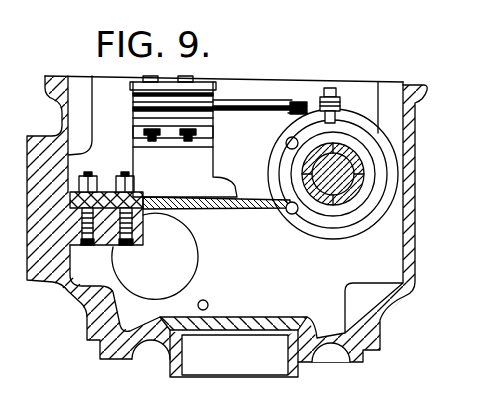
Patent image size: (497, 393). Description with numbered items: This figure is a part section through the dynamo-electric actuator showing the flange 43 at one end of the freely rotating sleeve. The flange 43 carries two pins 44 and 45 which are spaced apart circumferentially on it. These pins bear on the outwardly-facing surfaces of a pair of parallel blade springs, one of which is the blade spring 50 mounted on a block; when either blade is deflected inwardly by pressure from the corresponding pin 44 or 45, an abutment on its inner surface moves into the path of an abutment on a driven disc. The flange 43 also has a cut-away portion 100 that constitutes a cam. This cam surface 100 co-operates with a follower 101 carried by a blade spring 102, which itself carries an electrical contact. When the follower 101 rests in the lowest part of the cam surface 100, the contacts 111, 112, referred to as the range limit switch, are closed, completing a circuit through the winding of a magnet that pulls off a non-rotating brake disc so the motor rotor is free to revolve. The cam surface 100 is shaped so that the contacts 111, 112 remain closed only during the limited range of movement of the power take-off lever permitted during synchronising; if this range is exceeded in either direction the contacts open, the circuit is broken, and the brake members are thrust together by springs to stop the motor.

The flange 43 is at (353, 222).
The pin 44 is at (290, 133).
The pin 45 is at (290, 214).
The blade spring 50 is at (249, 212).
The cut-away portion 100 is at (305, 117).
The follower 101 is at (338, 102).
The blade spring 102 is at (257, 100).
The contact 111 is at (293, 106).
The contact 112 is at (288, 113).